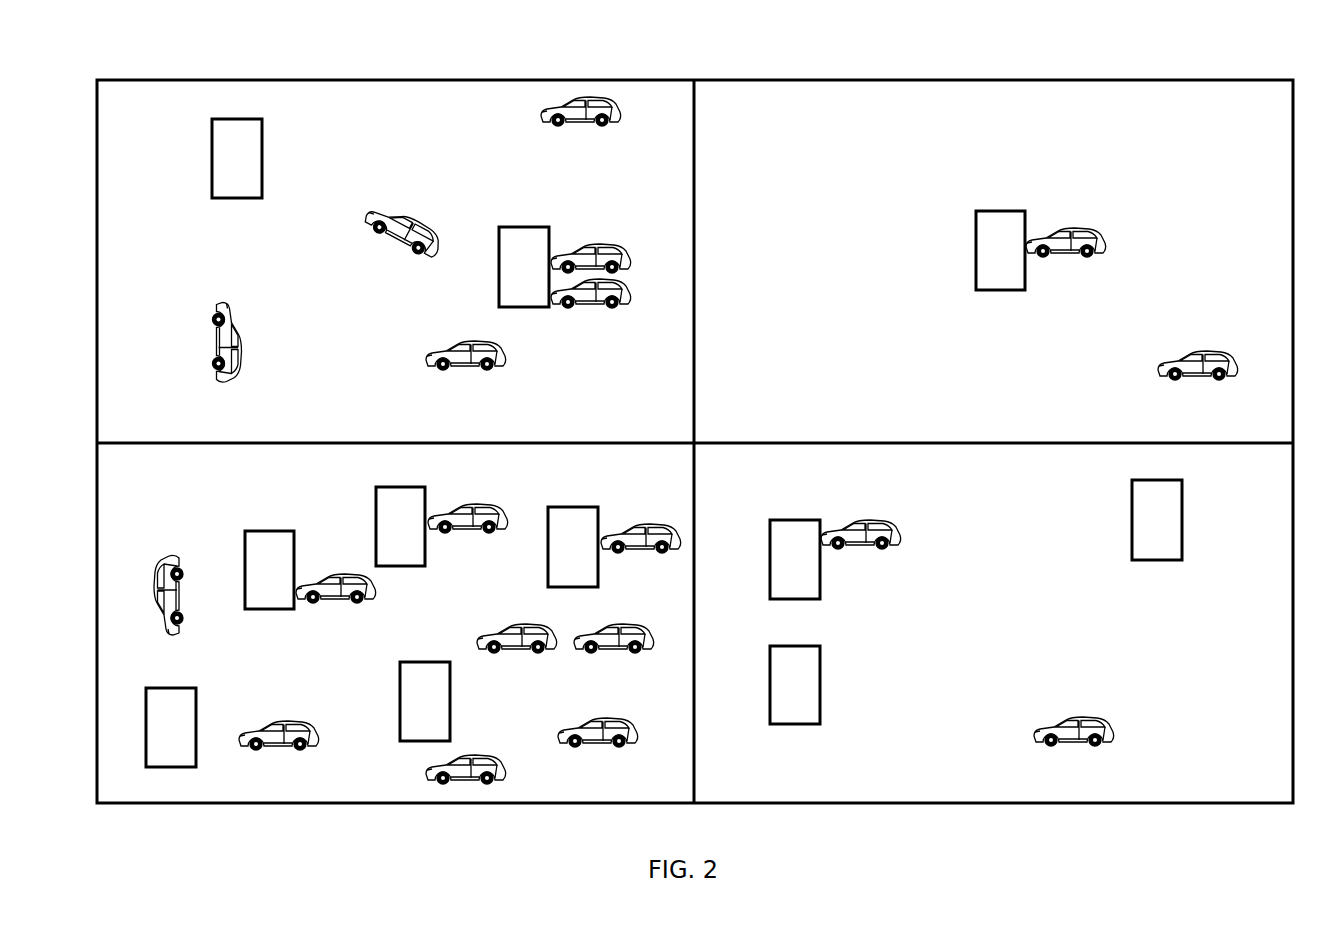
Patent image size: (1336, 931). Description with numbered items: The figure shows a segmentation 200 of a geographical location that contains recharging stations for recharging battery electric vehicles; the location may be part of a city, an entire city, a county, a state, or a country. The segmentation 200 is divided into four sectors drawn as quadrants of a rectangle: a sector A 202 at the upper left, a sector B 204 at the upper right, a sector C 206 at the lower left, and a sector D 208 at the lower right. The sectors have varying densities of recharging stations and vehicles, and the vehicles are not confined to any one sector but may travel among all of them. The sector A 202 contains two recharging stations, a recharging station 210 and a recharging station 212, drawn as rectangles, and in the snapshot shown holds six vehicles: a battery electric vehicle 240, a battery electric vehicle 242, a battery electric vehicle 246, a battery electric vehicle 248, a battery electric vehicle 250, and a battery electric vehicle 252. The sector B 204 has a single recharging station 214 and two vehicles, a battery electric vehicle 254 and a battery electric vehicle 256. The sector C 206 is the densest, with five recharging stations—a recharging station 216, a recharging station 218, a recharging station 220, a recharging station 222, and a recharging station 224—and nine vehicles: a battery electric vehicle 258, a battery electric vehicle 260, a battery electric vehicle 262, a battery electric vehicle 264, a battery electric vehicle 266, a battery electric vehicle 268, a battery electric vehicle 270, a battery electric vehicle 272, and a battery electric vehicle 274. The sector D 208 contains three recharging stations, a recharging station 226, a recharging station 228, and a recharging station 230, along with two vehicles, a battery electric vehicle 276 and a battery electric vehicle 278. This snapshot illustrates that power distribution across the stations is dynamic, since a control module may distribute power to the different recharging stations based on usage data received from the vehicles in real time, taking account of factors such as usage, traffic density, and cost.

The segmentation 200 is at (372, 52).
The sector A 202 is at (517, 78).
The sector B 204 is at (800, 78).
The sector C 206 is at (368, 805).
The sector D 208 is at (790, 805).
The recharging station 210 is at (210, 160).
The recharging station 212 is at (498, 293).
The recharging station 214 is at (975, 268).
The recharging station 216 is at (258, 528).
The recharging station 218 is at (375, 505).
The recharging station 220 is at (577, 507).
The recharging station 222 is at (197, 694).
The recharging station 224 is at (400, 690).
The recharging station 226 is at (798, 518).
The recharging station 228 is at (1130, 507).
The recharging station 230 is at (822, 660).
The battery electric vehicle 240 is at (540, 117).
The battery electric vehicle 242 is at (415, 210).
The battery electric vehicle 246 is at (592, 243).
The battery electric vehicle 248 is at (595, 310).
The battery electric vehicle 250 is at (212, 355).
The battery electric vehicle 252 is at (425, 363).
The battery electric vehicle 254 is at (1070, 228).
The battery electric vehicle 256 is at (1200, 350).
The battery electric vehicle 258 is at (177, 553).
The battery electric vehicle 260 is at (340, 605).
The battery electric vehicle 262 is at (475, 535).
The battery electric vehicle 264 is at (643, 522).
The battery electric vehicle 266 is at (475, 645).
The battery electric vehicle 268 is at (598, 655).
The battery electric vehicle 270 is at (322, 742).
The battery electric vehicle 272 is at (480, 752).
The battery electric vehicle 274 is at (635, 722).
The battery electric vehicle 276 is at (870, 518).
The battery electric vehicle 278 is at (1077, 718).